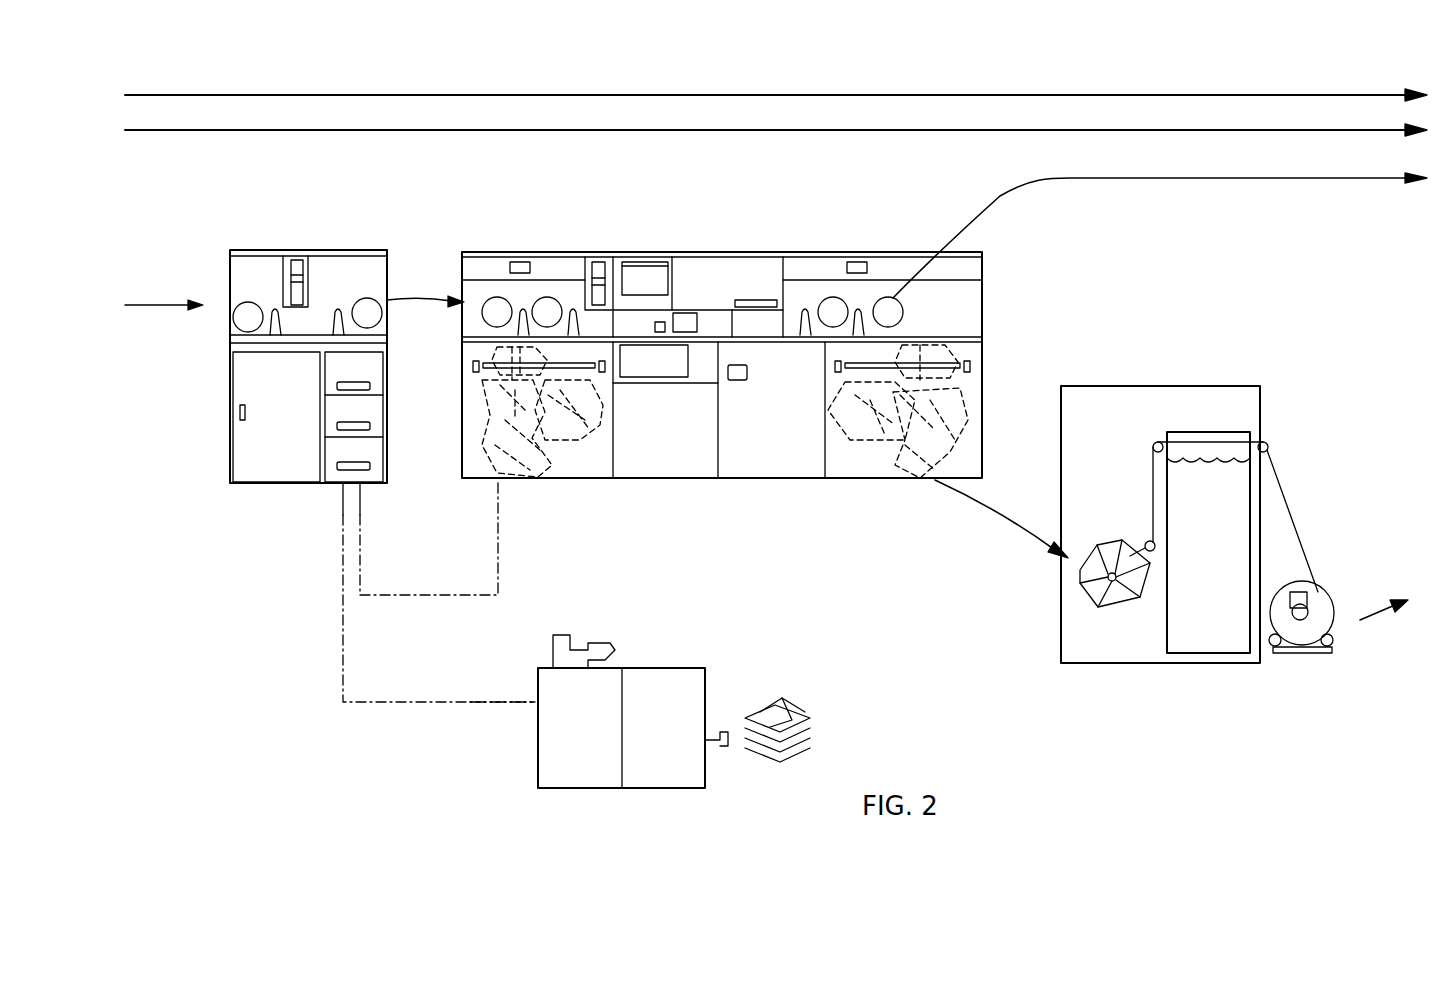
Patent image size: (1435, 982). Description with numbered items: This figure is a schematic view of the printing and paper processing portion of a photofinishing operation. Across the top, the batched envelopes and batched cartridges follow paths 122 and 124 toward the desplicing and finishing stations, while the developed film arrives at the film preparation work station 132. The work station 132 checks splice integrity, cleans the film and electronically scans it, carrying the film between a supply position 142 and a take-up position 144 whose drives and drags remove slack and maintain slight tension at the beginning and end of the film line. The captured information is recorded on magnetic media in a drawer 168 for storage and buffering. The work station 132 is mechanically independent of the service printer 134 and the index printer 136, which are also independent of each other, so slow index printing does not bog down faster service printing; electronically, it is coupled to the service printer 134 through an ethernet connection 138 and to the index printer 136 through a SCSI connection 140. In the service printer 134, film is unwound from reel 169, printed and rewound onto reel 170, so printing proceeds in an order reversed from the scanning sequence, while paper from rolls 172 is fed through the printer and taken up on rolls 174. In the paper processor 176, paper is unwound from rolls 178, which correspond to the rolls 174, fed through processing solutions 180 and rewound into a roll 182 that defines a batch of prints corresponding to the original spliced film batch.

The path 122 is at (957, 94).
The path 124 is at (996, 130).
The film preparation work station 132 is at (308, 323).
The service printer 134 is at (722, 339).
The index printer 136 is at (765, 658).
The ethernet connection 138 is at (430, 598).
The SCSI connection 140 is at (481, 700).
The supply position 142 is at (247, 310).
The take-up position 144 is at (367, 305).
The drawer 168 is at (375, 409).
The reel 169 is at (543, 298).
The reel 170 is at (892, 297).
The paper rolls 172 is at (517, 478).
The paper take-up rolls 174 is at (925, 478).
The paper processor 176 is at (1208, 497).
The paper rolls 178 is at (1075, 595).
The processing solutions 180 is at (1240, 578).
The roll 182 is at (1332, 628).